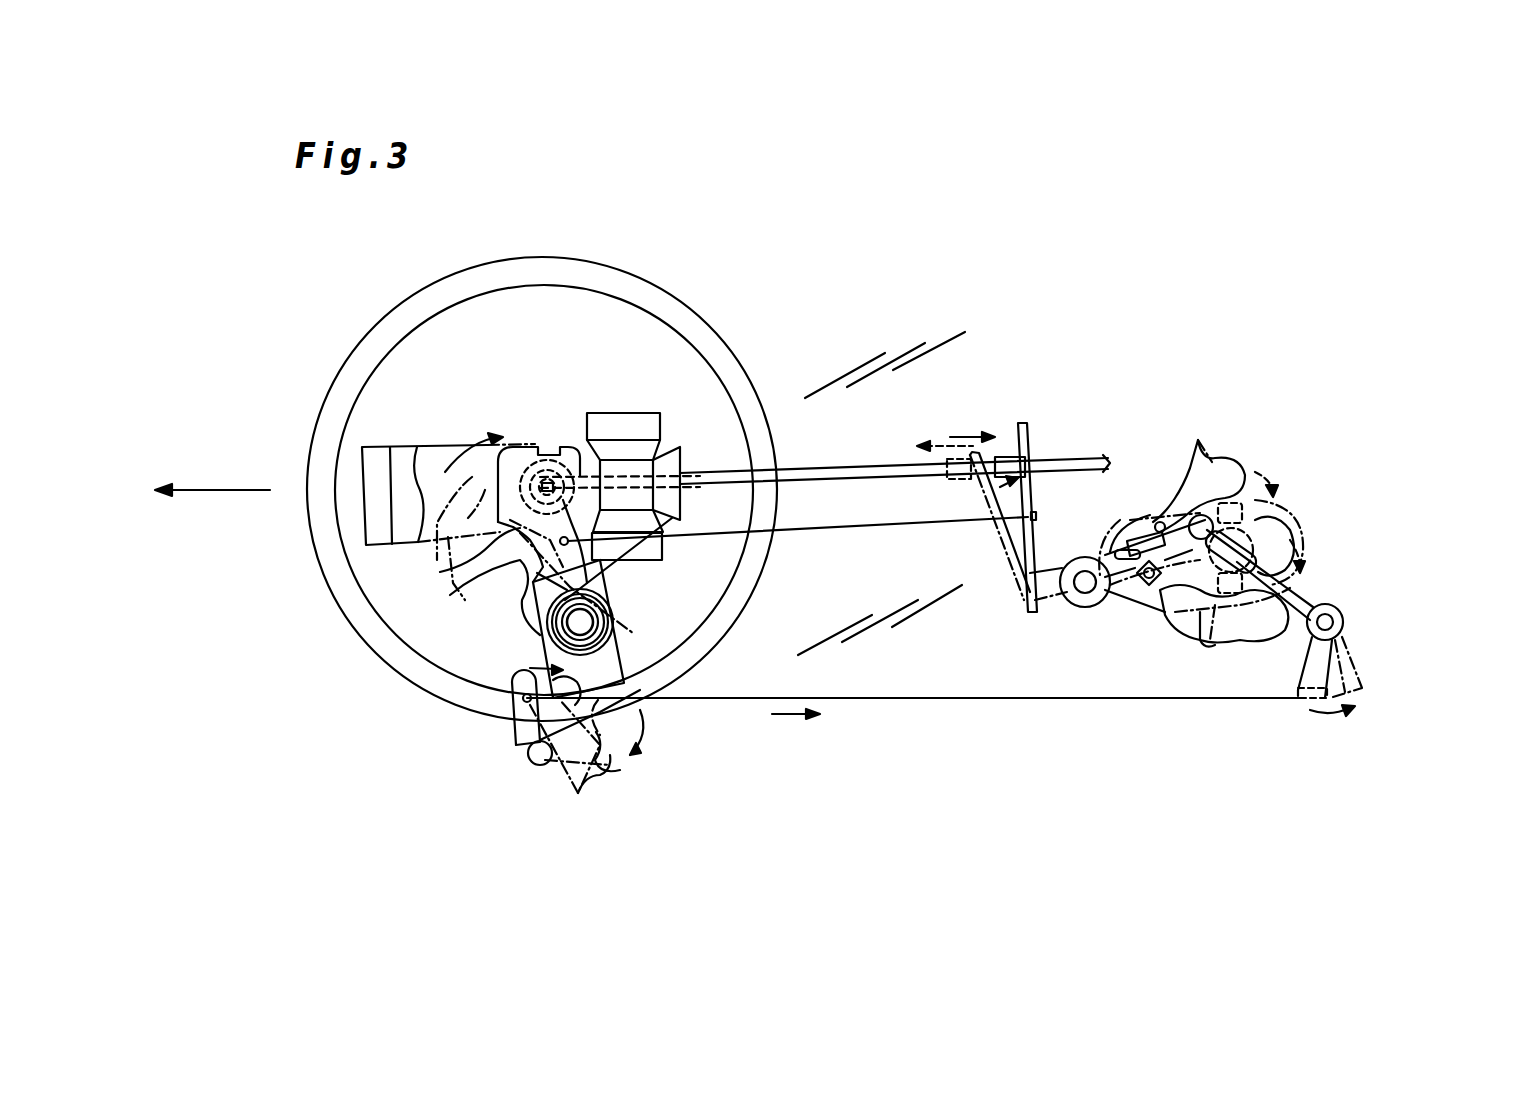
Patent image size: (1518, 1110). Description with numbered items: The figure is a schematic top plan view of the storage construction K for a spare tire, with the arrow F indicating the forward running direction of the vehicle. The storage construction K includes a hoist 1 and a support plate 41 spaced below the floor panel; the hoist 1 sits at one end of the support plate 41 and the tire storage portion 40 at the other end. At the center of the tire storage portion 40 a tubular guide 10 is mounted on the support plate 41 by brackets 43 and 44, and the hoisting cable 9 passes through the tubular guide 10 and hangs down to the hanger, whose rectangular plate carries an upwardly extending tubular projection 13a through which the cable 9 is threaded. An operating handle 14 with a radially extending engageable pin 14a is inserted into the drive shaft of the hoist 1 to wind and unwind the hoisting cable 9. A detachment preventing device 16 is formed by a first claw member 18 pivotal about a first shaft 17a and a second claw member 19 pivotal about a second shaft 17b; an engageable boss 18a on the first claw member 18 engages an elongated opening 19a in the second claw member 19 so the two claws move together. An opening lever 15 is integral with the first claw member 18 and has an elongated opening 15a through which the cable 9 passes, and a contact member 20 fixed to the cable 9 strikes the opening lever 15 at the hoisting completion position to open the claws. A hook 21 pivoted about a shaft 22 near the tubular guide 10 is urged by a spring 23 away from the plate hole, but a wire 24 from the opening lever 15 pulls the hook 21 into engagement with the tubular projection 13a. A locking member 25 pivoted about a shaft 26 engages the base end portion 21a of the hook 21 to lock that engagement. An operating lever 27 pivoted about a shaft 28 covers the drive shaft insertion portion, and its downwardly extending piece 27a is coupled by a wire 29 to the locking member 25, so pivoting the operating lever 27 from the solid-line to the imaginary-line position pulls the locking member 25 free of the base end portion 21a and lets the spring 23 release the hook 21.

The hoist 1 is at (1413, 518).
The hoisting cable 9 is at (840, 470).
The tubular guide 10 is at (625, 470).
The tubular projection 13a is at (537, 468).
The operating handle 14 is at (1258, 538).
The engageable pin 14a is at (1250, 525).
The opening lever 15 is at (1040, 542).
The elongated opening 15a is at (1028, 432).
The detachment preventing device 16 is at (1297, 470).
The first shaft 17a is at (1083, 592).
The second shaft 17b is at (1160, 522).
The first claw member 18 is at (1215, 610).
The engageable boss 18a is at (1140, 580).
The second claw member 19 is at (1199, 468).
The elongated opening 19a is at (1150, 586).
The contact member 20 is at (995, 457).
The hook 21 is at (470, 548).
The base end portion 21a is at (620, 742).
The shaft 22 is at (582, 625).
The spring 23 is at (612, 600).
The wire 24 is at (836, 528).
The locking member 25 is at (580, 792).
The shaft 26 is at (535, 762).
The operating lever 27 is at (1282, 595).
The downwardly extending piece 27a is at (1309, 704).
The shaft 28 is at (1330, 621).
The wire 29 is at (985, 700).
The tire storage portion 40 is at (607, 240).
The support plate 41 is at (908, 328).
The bracket 43 is at (404, 455).
The bracket 44 is at (650, 445).
The storage construction K is at (1022, 229).
The forward running direction F is at (212, 473).